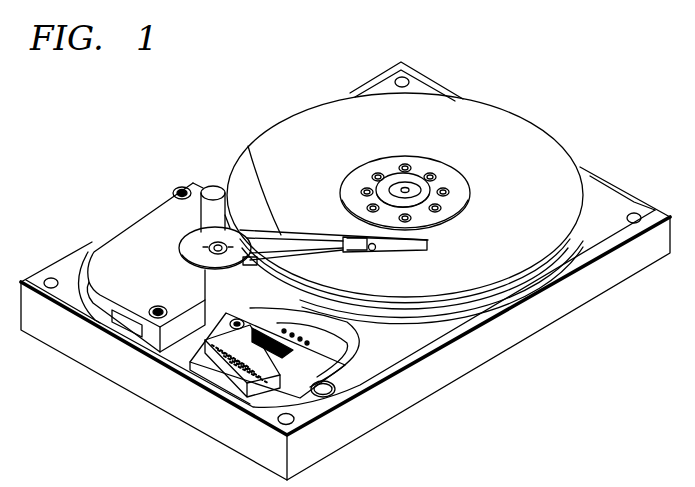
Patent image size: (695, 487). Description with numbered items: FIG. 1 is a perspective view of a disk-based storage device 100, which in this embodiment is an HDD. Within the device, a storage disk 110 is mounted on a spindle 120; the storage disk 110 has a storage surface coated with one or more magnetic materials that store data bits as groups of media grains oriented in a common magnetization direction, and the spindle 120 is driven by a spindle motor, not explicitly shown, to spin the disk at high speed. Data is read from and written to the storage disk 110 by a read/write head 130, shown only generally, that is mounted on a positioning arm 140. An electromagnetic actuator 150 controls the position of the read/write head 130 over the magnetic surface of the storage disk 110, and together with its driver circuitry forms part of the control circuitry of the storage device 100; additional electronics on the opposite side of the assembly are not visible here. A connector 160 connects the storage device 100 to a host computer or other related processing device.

The disk-based storage device 100 is at (142, 110).
The storage disk 110 is at (512, 130).
The spindle 120 is at (422, 187).
The read/write head 130 is at (397, 243).
The positioning arm 140 is at (275, 236).
The electromagnetic actuator 150 is at (123, 233).
The connector 160 is at (232, 365).